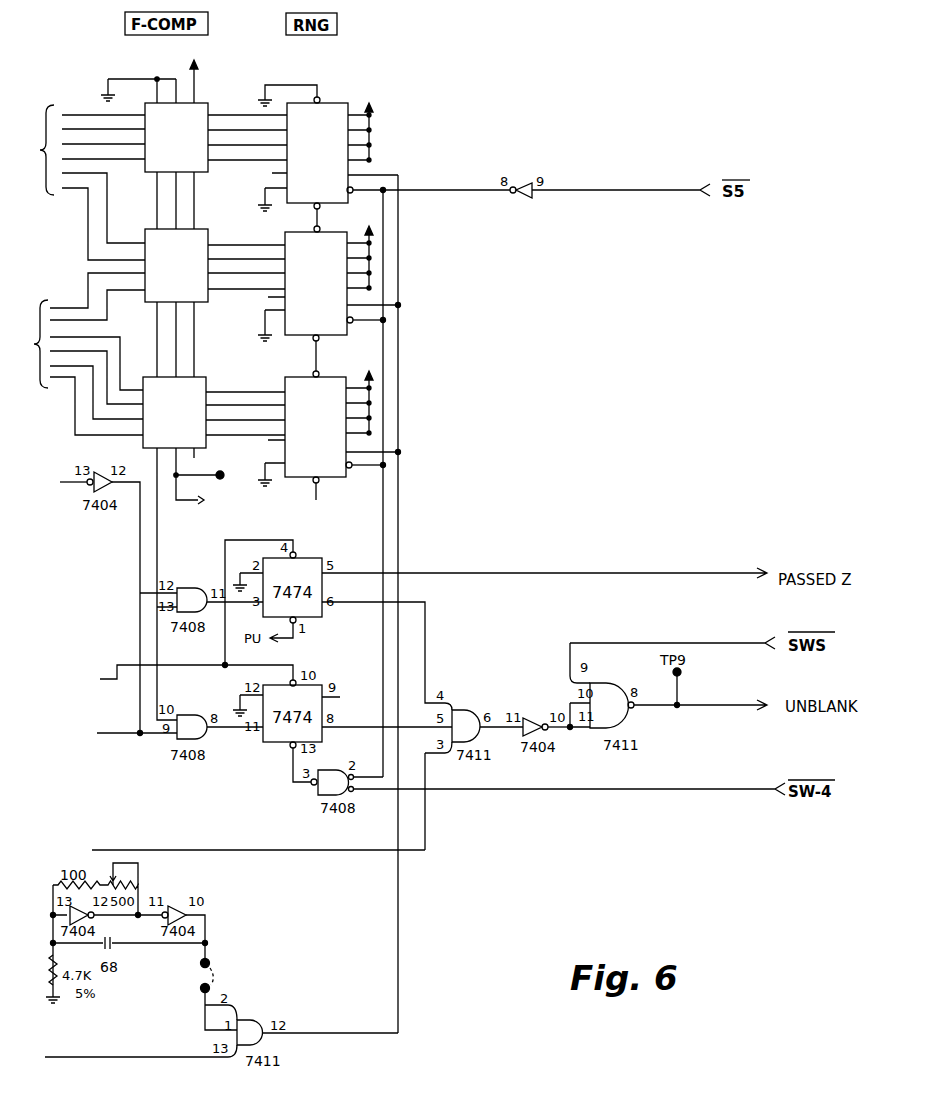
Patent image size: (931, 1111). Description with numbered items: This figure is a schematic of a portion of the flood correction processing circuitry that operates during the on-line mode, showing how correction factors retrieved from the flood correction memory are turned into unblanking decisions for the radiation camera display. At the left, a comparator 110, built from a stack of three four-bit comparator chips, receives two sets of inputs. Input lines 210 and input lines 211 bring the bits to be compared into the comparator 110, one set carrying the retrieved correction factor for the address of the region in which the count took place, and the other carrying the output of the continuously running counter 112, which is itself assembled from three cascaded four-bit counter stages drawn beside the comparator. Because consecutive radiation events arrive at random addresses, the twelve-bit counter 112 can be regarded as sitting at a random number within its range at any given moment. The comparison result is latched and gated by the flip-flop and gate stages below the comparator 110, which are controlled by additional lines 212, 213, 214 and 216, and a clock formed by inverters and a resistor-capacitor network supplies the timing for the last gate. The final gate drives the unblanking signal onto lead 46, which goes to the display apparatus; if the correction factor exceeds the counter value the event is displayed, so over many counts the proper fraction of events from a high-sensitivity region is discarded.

The comparator 110 is at (232, 356).
The continuously running counter 112 is at (370, 356).
The first comparator input lines 210 is at (41, 150).
The second comparator input lines 211 is at (35, 344).
The clear/reset input line 212 is at (100, 679).
The gate enable input line 213 is at (100, 735).
The input line to 7411 gate 214 is at (145, 850).
The input line to clock gate 216 is at (88, 1058).
The lead 46 is at (703, 705).